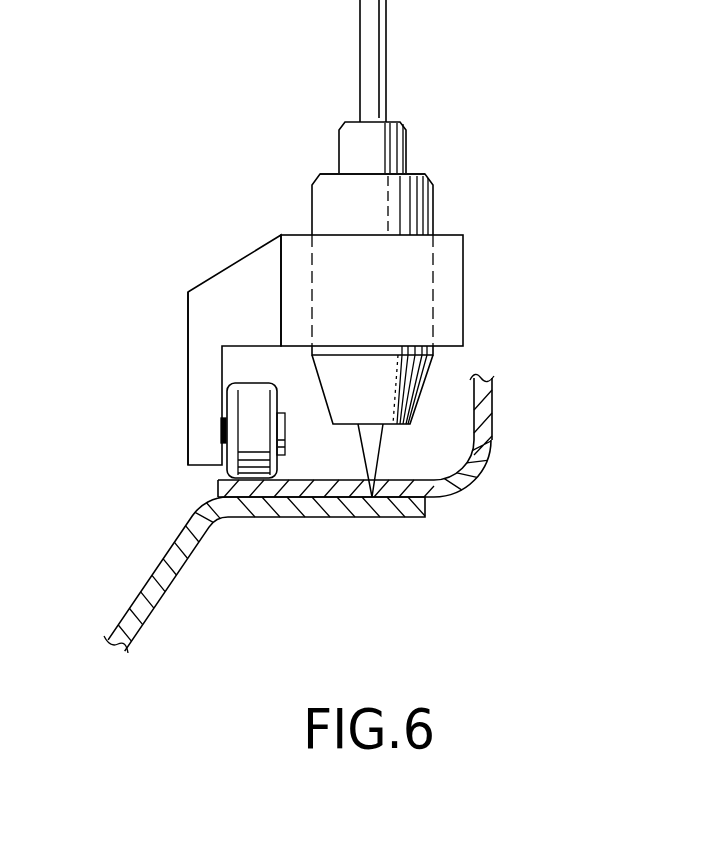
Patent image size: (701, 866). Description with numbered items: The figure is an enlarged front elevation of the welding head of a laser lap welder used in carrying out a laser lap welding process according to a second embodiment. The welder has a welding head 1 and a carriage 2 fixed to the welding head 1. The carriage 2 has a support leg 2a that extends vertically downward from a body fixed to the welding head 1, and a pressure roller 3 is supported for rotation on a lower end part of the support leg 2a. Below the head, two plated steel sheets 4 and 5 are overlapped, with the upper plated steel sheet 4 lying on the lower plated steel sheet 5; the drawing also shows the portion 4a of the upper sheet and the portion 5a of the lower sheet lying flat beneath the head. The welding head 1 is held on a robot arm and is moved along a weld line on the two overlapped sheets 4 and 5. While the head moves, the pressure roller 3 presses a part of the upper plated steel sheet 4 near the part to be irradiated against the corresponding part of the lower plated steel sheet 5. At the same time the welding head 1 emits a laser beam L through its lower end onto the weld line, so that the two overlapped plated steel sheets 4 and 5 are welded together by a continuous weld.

The welding head 1 is at (430, 205).
The laser beam L is at (383, 450).
The carriage 2 is at (194, 262).
The support leg 2a is at (196, 327).
The pressure roller 3 is at (250, 470).
The upper plated steel sheet 4 is at (495, 405).
The bracket horizontal portion 4a is at (417, 517).
The lower plated steel sheet 5 is at (140, 603).
The plate flat portion 5a is at (323, 490).